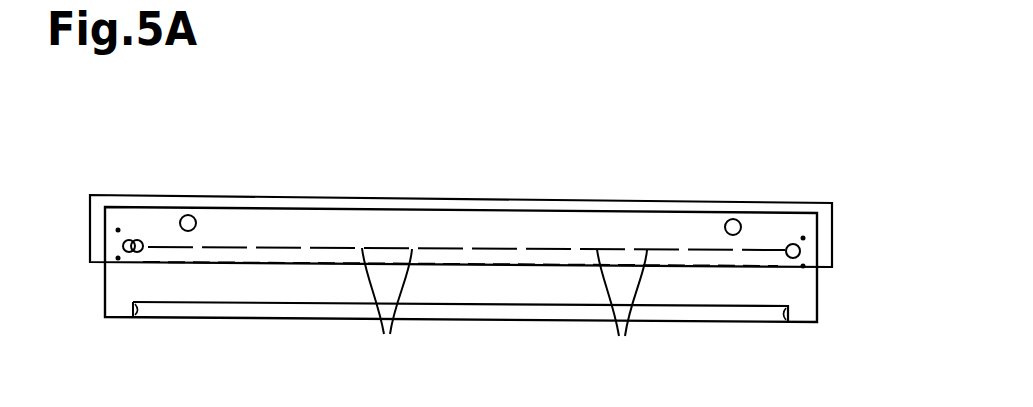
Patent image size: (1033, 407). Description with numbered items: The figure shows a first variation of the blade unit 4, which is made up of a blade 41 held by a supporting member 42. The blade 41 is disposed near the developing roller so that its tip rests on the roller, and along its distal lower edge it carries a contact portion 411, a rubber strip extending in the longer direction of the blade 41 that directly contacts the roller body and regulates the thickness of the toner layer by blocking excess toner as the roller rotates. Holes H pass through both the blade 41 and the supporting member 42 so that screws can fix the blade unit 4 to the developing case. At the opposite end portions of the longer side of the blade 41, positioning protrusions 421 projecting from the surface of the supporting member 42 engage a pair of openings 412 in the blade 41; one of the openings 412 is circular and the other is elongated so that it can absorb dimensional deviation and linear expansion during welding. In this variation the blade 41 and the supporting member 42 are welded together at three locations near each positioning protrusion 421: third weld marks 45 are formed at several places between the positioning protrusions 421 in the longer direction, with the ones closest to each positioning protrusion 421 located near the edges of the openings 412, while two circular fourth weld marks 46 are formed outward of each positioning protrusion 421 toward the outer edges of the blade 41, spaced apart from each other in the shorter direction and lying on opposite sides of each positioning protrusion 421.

The blade unit 4 is at (687, 125).
The blade 41 is at (322, 228).
The supporting member 42 is at (397, 197).
The third weld mark 45 is at (504, 303).
The fourth weld mark 46 is at (118, 230).
The contact portion 411 is at (483, 311).
The openings 412 is at (135, 262).
The positioning protrusion 421 is at (135, 262).
The holes H is at (191, 215).